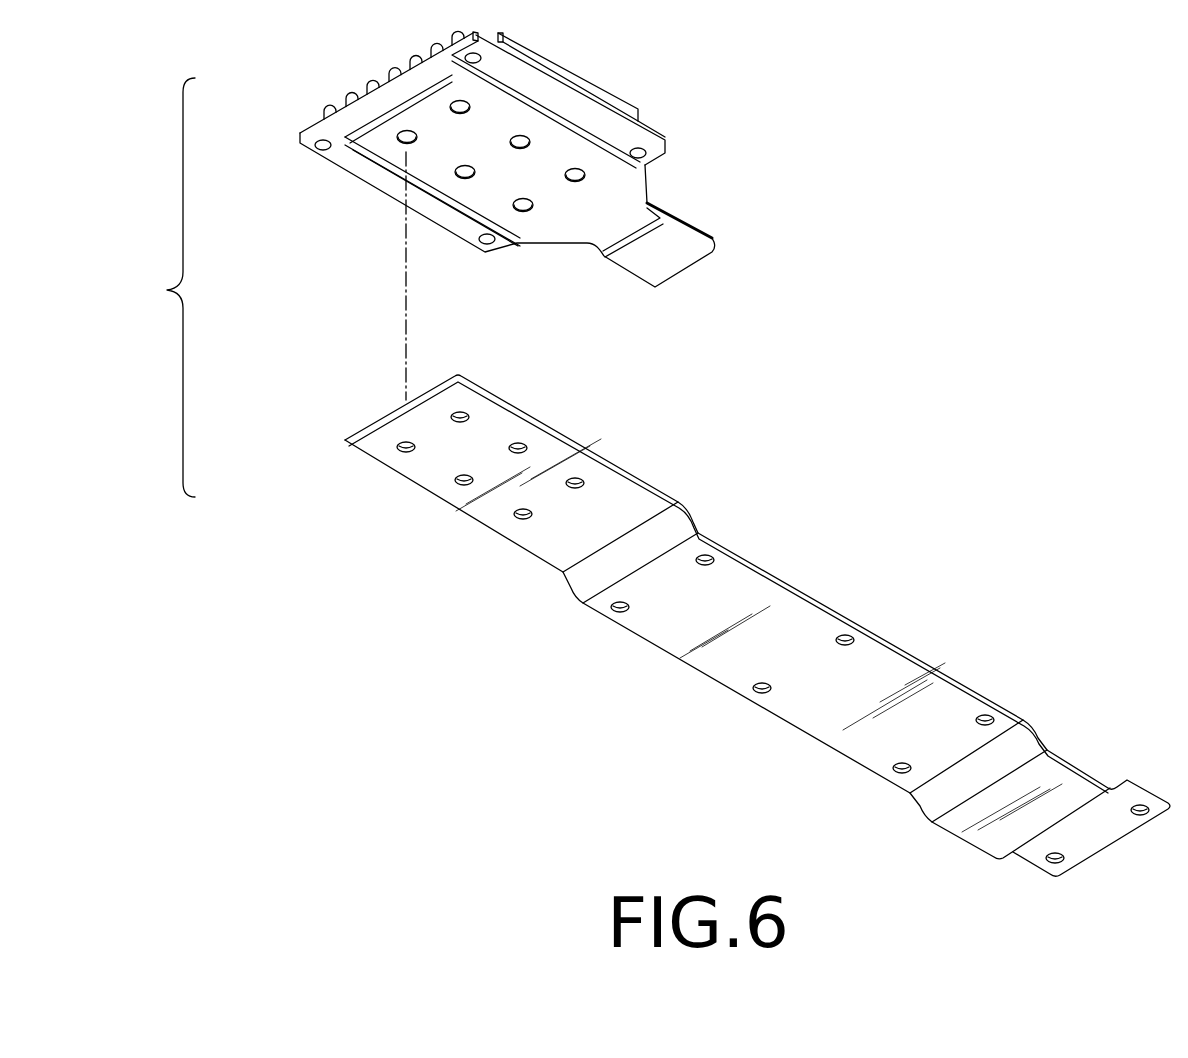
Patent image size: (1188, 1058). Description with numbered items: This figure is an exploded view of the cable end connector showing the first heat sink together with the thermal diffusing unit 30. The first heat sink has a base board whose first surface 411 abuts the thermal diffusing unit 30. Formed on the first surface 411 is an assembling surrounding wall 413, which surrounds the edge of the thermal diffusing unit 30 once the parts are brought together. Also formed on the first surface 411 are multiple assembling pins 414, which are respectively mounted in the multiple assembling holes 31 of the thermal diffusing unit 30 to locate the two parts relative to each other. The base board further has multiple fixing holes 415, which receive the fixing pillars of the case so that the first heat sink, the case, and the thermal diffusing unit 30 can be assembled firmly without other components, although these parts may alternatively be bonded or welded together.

The thermal diffusing unit 30 is at (649, 612).
The assembling holes 31 is at (405, 454).
The first surface 411 is at (372, 142).
The assembling surrounding wall 413 is at (563, 131).
The assembling pins 414 is at (586, 179).
The fixing holes 415 is at (490, 246).